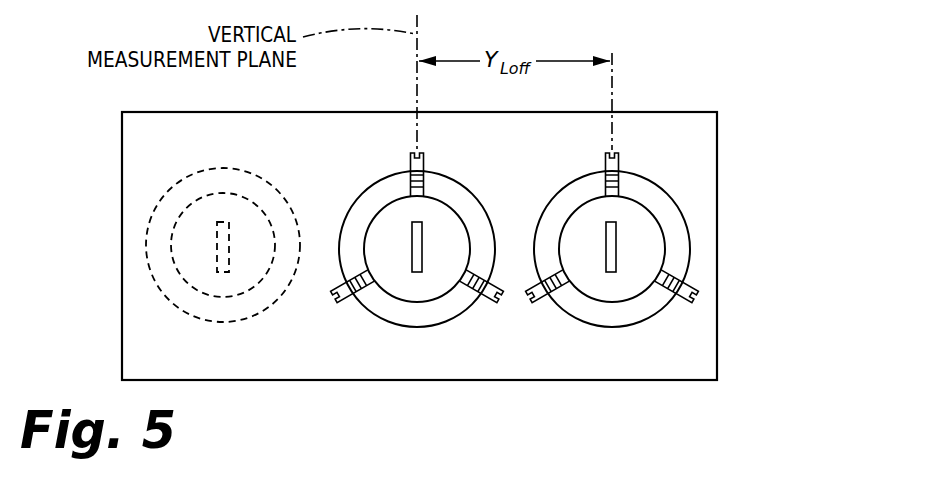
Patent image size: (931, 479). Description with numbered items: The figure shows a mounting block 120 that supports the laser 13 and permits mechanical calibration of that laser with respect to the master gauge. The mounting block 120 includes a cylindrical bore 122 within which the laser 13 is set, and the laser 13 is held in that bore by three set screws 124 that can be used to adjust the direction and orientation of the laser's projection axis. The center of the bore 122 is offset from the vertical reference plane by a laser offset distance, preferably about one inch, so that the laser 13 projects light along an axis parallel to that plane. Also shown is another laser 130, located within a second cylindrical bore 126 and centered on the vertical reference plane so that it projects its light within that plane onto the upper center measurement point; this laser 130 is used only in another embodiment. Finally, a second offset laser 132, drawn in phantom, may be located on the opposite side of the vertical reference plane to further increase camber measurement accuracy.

The mounting block 120 is at (718, 142).
The cylindrical bore 122 is at (672, 218).
The set screws 124 is at (700, 301).
The second cylindrical bore 126 is at (382, 186).
The laser 130 is at (387, 259).
The laser 13 is at (658, 294).
The second offset laser 132 is at (172, 261).